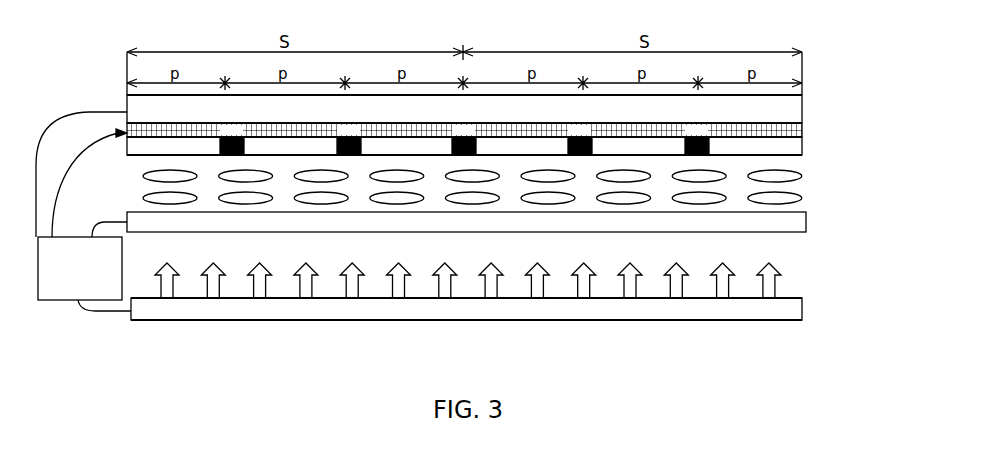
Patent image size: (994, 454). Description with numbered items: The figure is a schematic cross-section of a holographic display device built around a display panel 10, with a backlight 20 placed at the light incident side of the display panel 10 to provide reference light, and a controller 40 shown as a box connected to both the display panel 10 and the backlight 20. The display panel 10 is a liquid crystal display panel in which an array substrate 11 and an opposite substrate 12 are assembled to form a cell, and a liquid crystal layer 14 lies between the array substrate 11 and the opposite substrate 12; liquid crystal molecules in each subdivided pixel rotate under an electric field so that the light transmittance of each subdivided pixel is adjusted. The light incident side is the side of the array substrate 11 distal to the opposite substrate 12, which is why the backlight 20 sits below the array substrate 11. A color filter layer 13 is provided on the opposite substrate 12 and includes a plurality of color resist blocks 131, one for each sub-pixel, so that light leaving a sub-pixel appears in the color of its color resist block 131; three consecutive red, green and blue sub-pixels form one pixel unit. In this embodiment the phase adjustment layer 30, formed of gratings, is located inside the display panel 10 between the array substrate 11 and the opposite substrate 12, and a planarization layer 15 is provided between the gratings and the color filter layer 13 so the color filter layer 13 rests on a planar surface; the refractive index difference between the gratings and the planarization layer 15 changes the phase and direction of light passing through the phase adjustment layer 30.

The display panel 10 is at (519, 146).
The array substrate 11 is at (496, 221).
The opposite substrate 12 is at (805, 117).
The color filter layer 13 is at (807, 147).
The color resist block 131 is at (803, 127).
The liquid crystal layer 14 is at (803, 187).
The planarization layer 15 is at (118, 134).
The backlight 20 is at (802, 285).
The phase adjustment layer 30 is at (116, 133).
The controller 40 is at (55, 300).